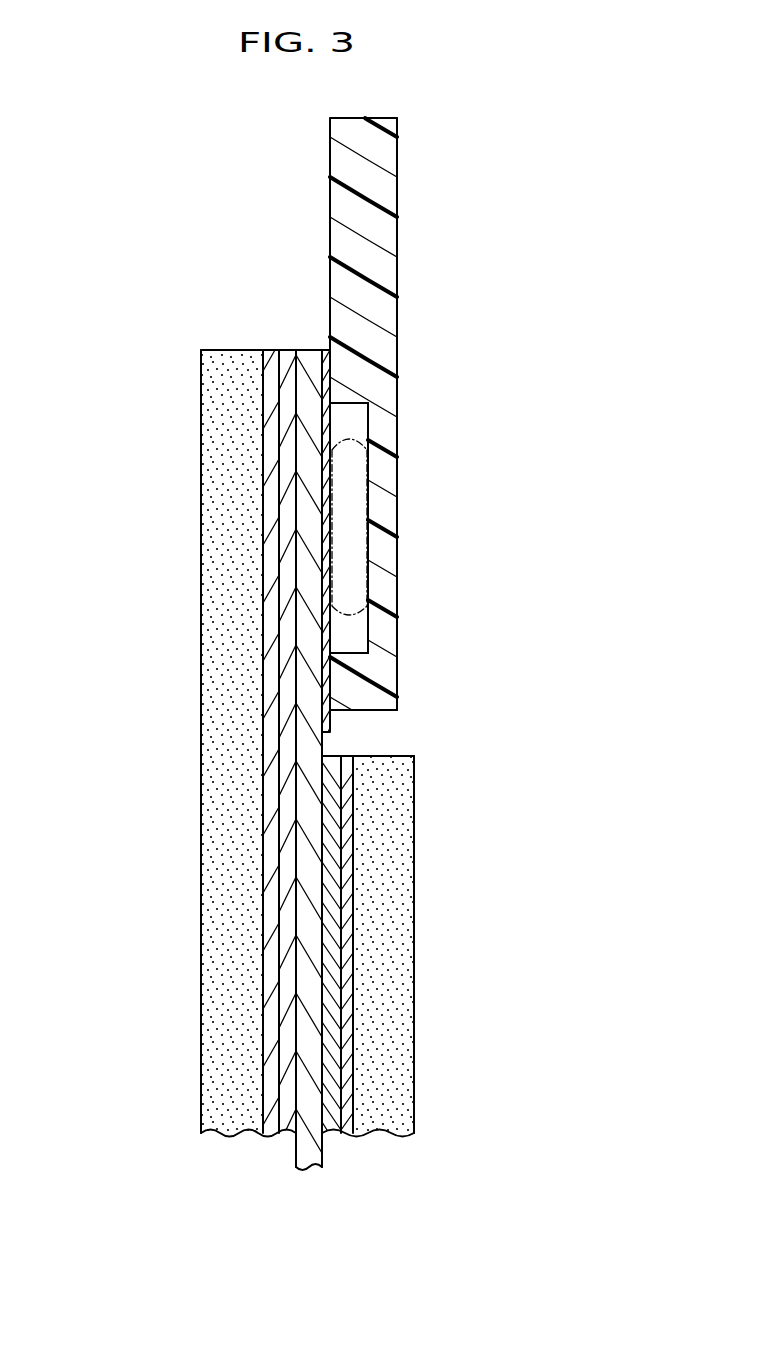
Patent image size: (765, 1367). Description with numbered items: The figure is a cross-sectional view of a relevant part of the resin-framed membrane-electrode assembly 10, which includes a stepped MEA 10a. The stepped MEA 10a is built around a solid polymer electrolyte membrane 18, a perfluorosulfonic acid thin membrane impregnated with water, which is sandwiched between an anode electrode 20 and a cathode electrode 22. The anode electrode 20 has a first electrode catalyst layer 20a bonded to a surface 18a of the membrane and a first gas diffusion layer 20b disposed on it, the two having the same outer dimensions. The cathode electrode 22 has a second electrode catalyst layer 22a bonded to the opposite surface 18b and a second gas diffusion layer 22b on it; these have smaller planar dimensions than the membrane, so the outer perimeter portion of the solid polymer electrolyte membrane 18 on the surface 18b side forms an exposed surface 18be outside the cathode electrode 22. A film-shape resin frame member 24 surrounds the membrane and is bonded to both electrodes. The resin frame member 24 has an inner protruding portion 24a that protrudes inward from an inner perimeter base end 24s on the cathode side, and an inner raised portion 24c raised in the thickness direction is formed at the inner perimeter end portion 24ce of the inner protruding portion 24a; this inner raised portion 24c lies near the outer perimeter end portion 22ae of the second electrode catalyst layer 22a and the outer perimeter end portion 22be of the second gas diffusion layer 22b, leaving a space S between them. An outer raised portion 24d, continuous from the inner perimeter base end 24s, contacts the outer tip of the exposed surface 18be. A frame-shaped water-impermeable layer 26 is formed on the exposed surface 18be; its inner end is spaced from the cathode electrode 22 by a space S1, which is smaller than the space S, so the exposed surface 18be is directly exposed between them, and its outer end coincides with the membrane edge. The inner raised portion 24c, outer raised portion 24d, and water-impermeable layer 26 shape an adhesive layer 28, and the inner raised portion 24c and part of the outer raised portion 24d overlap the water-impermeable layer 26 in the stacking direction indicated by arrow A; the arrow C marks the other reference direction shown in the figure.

The resin-framed membrane-electrode assembly 10 is at (207, 162).
The stepped MEA 10a is at (224, 332).
The solid polymer electrolyte membrane 18 is at (311, 799).
The surface of the solid polymer electrolyte membrane 18a is at (295, 1149).
The surface of the solid polymer electrolyte membrane 18b is at (323, 1149).
The exposed surface 18be is at (328, 386).
The anode electrode 20 is at (93, 900).
The first electrode catalyst layer 20a is at (290, 920).
The first gas diffusion layer 20b is at (175, 741).
The cathode electrode 22 is at (527, 900).
The second electrode catalyst layer 22a is at (331, 923).
The outer perimeter end portion of the second electrode catalyst layer 22ae is at (334, 757).
The second gas diffusion layer 22b is at (445, 941).
The outer perimeter end portion of the second gas diffusion layer 22be is at (400, 756).
The resin frame member 24 is at (410, 163).
The inner protruding portion 24a is at (388, 548).
The inner raised portion 24c is at (347, 678).
The edge of frame member 24ce is at (392, 713).
The outer raised portion 24d is at (388, 240).
The inner perimeter base end 24s is at (348, 404).
The water-impermeable layer 26 is at (332, 478).
The adhesive layer 28 is at (360, 575).
The space S is at (397, 710).
The space S1 is at (330, 732).
The stacking direction C is at (103, 1145).
The arrow A direction A is at (190, 1222).